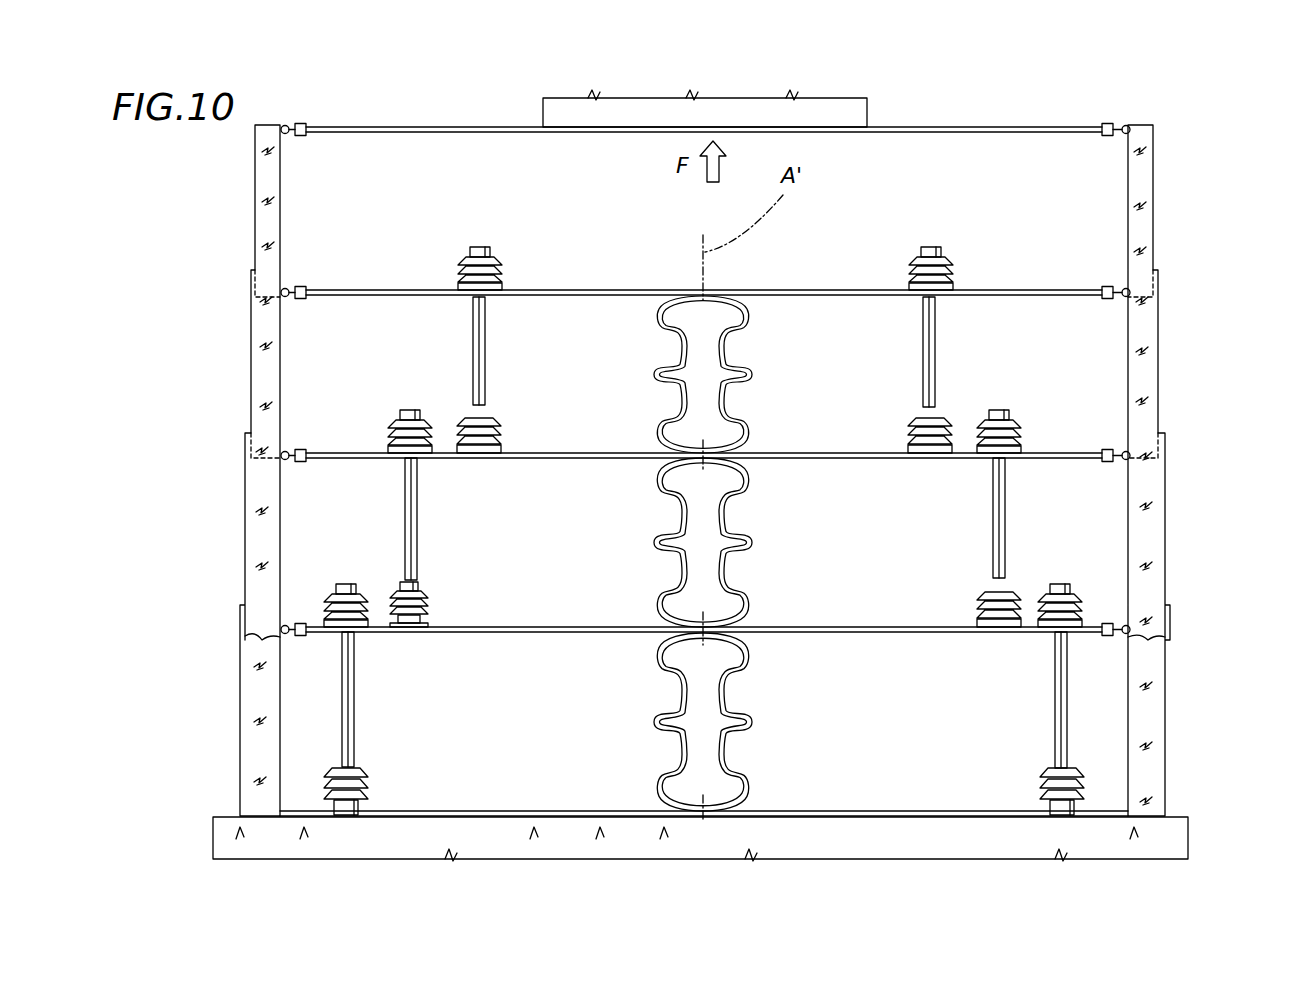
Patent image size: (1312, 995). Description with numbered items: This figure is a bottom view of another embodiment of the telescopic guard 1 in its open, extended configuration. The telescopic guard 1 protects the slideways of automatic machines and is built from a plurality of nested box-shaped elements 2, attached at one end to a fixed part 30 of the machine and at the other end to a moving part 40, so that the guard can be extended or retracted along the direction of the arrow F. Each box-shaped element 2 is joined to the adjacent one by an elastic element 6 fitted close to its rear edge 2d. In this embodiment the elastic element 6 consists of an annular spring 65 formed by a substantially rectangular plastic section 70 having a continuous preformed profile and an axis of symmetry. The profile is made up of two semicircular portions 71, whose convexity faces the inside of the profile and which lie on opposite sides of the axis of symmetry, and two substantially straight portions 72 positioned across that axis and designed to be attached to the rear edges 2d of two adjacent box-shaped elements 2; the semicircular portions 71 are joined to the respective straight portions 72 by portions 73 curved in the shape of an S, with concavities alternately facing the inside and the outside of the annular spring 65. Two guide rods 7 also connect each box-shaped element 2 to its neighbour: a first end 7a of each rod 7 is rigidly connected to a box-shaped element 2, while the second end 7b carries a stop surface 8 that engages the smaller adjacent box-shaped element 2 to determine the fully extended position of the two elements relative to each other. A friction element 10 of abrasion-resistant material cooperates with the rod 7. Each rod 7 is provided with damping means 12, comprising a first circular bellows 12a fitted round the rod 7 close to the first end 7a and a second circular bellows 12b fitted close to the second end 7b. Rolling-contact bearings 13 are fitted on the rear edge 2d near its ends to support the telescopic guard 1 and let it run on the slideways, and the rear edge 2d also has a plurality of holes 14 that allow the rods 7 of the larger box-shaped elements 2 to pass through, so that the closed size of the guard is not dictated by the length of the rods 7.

The telescopic guard 1 is at (1176, 148).
The box-shaped element 2 is at (248, 193).
The rear edge 2d is at (950, 634).
The elastic element 6 is at (682, 479).
The guide rod 7 is at (402, 512).
The first end 7a is at (400, 568).
The second end 7b is at (400, 467).
The stop surface 8 is at (385, 428).
The friction element 10 is at (385, 448).
The damping means 12 is at (460, 402).
The first circular bellows 12a is at (958, 408).
The second circular bellows 12b is at (380, 433).
The rolling-contact bearings 13 is at (300, 636).
The holes 14 is at (410, 292).
The fixed part 30 is at (248, 831).
The moving part 40 is at (745, 110).
The annular spring 65 is at (652, 428).
The plastic section 70 is at (729, 513).
The semicircular portions 71 is at (653, 363).
The straight portions 72 is at (689, 297).
The S-shaped curved portions 73 is at (673, 340).